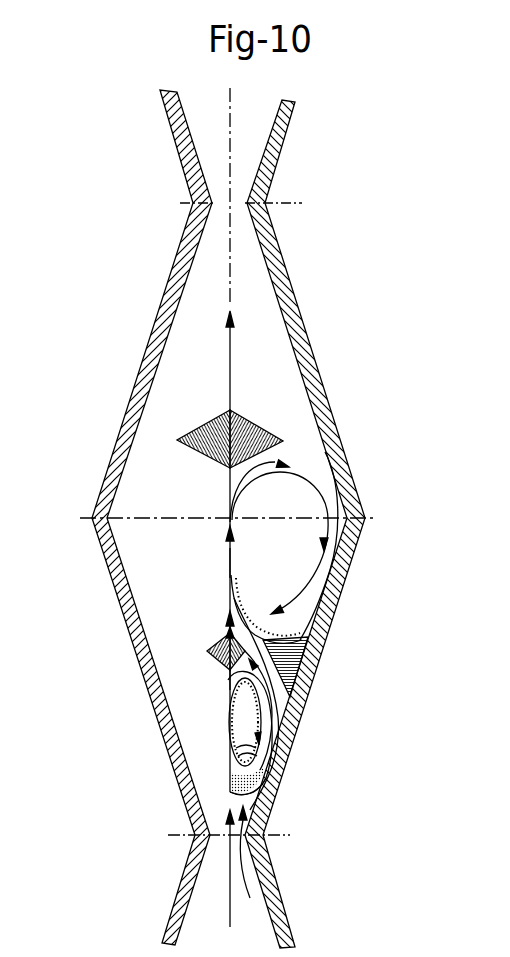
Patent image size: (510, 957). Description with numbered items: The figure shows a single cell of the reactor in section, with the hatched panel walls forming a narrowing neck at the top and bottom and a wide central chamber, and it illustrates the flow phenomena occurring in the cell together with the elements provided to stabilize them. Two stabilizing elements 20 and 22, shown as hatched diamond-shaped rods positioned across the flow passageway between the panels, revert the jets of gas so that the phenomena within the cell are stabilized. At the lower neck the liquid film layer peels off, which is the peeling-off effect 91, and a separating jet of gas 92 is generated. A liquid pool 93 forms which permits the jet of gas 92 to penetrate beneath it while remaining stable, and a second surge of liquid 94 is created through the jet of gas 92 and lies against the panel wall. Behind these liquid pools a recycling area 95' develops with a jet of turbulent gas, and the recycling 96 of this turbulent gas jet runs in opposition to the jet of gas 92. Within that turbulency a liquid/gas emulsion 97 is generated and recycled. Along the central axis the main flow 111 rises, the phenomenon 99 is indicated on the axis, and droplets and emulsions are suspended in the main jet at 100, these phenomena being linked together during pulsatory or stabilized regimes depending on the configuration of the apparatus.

The stabilizing element 22 is at (253, 430).
The stabilizing element 20 is at (207, 649).
The recycling area 95' is at (160, 732).
The central flow stream 111 is at (227, 562).
The phenomenon corresponding to effect eight 99 is at (227, 620).
The suspension of droplets and emulsions in the main jet 100 is at (227, 673).
The liquid/gas emulsion 97 is at (240, 755).
The liquid pool 93 is at (250, 781).
The second surge of liquid 94 is at (293, 657).
The recycling of turbulent gas jet 96 is at (267, 717).
The separating jet of gas 92 is at (268, 747).
The peeling-off effect of liquid film layer 91 is at (260, 778).